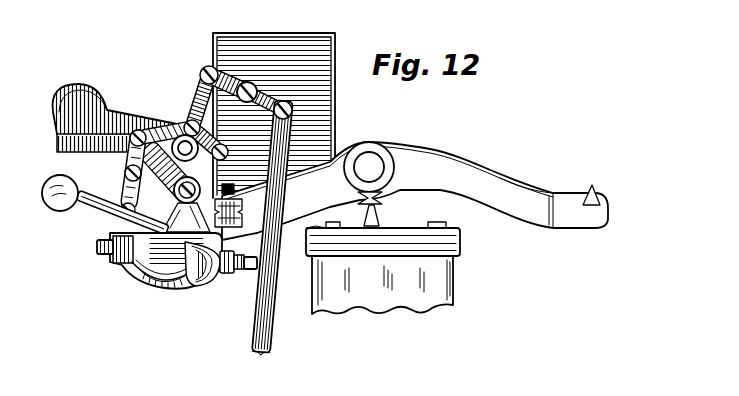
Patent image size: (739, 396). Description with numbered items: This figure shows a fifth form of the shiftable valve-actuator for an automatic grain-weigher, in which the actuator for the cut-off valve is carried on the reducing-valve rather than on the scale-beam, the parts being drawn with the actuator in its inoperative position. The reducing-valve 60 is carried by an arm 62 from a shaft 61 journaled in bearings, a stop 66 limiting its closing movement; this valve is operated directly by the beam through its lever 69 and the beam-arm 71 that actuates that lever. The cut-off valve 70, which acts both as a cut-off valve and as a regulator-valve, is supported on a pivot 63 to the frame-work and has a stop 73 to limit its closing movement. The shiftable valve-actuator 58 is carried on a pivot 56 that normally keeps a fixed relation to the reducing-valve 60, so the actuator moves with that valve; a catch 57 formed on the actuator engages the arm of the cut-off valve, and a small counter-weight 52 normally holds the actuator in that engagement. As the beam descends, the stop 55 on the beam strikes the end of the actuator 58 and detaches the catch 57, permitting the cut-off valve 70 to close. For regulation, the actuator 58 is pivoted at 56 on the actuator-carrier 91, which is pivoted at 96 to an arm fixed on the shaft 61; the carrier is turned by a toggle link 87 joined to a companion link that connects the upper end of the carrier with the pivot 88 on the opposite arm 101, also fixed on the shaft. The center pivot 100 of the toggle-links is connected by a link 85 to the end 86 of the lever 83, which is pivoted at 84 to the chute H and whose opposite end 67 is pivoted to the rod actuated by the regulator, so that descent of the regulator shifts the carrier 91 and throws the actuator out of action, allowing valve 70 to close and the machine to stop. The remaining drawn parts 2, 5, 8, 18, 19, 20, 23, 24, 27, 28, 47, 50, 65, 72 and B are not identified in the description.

The base 2 is at (405, 300).
The base plate 5 is at (461, 240).
The frame link 8 is at (168, 172).
The connecting bar 18 is at (270, 322).
The lever arm portion 19 is at (293, 207).
The pin 20 is at (383, 195).
The plate 23 is at (368, 236).
The cone seat 24 is at (377, 213).
The stop 27 is at (594, 190).
The lever arm 28 is at (532, 187).
The link portion 47 is at (218, 140).
The hub 50 is at (370, 150).
The counter-weight 52 is at (42, 194).
The stop 55 is at (232, 197).
The pivot 56 is at (118, 212).
The catch 57 is at (166, 261).
The shiftable valve-actuator 58 is at (146, 268).
The reducing-valve 60 is at (160, 287).
The shaft 61 is at (178, 124).
The arm 62 is at (118, 262).
The pivot 63 is at (226, 184).
The cylinder 65 is at (184, 282).
The stop 66 is at (96, 246).
The end of lever 67 is at (288, 103).
The lever 69 is at (110, 107).
The cut-off valve 70 is at (198, 289).
The beam-arm 71 is at (57, 143).
The bolt 72 is at (225, 274).
The stop 73 is at (258, 263).
The lever 83 is at (230, 78).
The pivot 84 is at (250, 82).
The link 85 is at (200, 86).
The end of lever 86 is at (207, 66).
The toggle link 87 is at (158, 136).
The pivot 88 is at (229, 152).
The actuator-carrier 91 is at (128, 190).
The pivot 96 is at (126, 171).
The center pivot 100 is at (191, 121).
The arm 101 is at (186, 197).
The lever B is at (415, 181).
The chute H is at (274, 105).